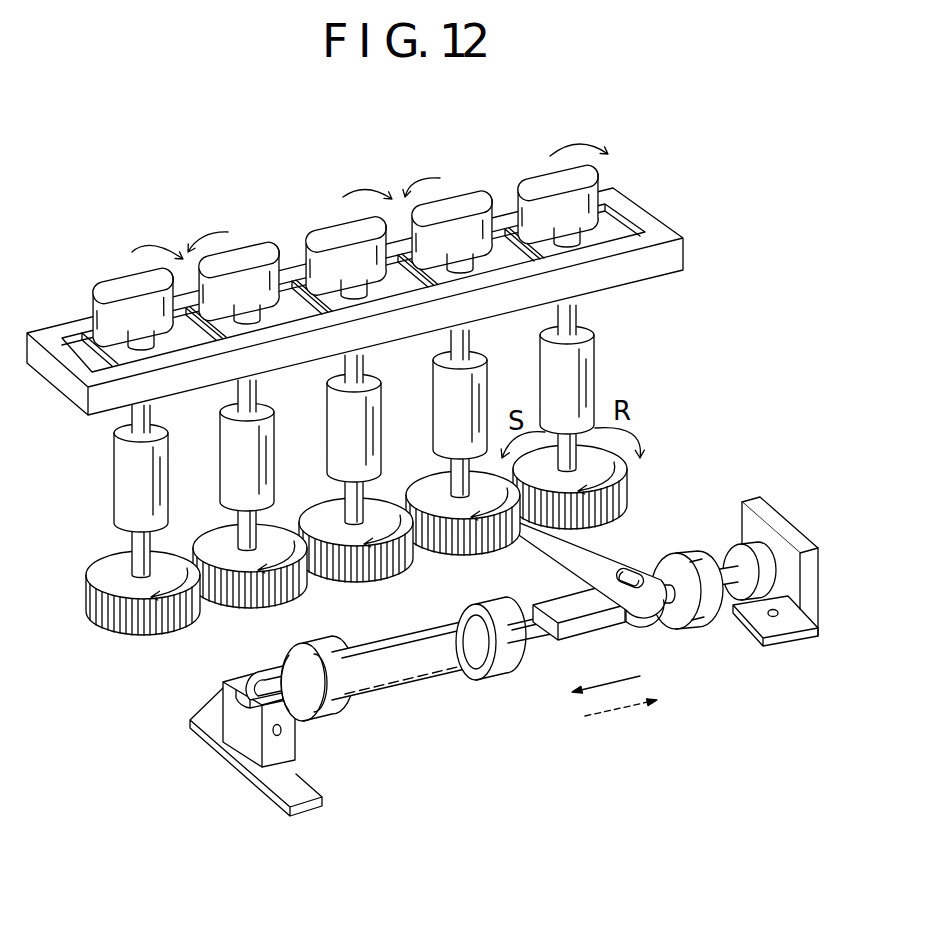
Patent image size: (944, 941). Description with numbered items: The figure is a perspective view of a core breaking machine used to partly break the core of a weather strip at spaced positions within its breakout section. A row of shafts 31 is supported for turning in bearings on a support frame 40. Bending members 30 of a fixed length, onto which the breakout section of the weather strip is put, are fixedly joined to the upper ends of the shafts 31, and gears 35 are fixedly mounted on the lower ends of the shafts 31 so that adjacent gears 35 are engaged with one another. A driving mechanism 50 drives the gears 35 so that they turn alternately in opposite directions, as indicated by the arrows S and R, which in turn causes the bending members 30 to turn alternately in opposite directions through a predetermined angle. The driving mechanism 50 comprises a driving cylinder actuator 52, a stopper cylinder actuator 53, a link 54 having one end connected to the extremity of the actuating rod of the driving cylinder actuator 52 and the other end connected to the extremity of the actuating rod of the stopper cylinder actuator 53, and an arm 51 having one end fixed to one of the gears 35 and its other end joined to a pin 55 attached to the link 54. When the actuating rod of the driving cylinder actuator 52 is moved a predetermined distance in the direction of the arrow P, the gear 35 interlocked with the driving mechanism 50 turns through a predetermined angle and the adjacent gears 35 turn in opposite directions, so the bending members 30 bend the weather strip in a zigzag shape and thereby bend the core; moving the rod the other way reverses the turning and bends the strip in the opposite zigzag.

The bending member 30 is at (117, 284).
The shaft 31 is at (120, 473).
The gear 35 is at (110, 565).
The support frame 40 is at (643, 218).
The driving mechanism 50 is at (504, 635).
The arm 51 is at (591, 558).
The driving cylinder actuator 52 is at (428, 660).
The stopper cylinder actuator 53 is at (737, 537).
The link 54 is at (607, 623).
The pin 55 is at (617, 580).